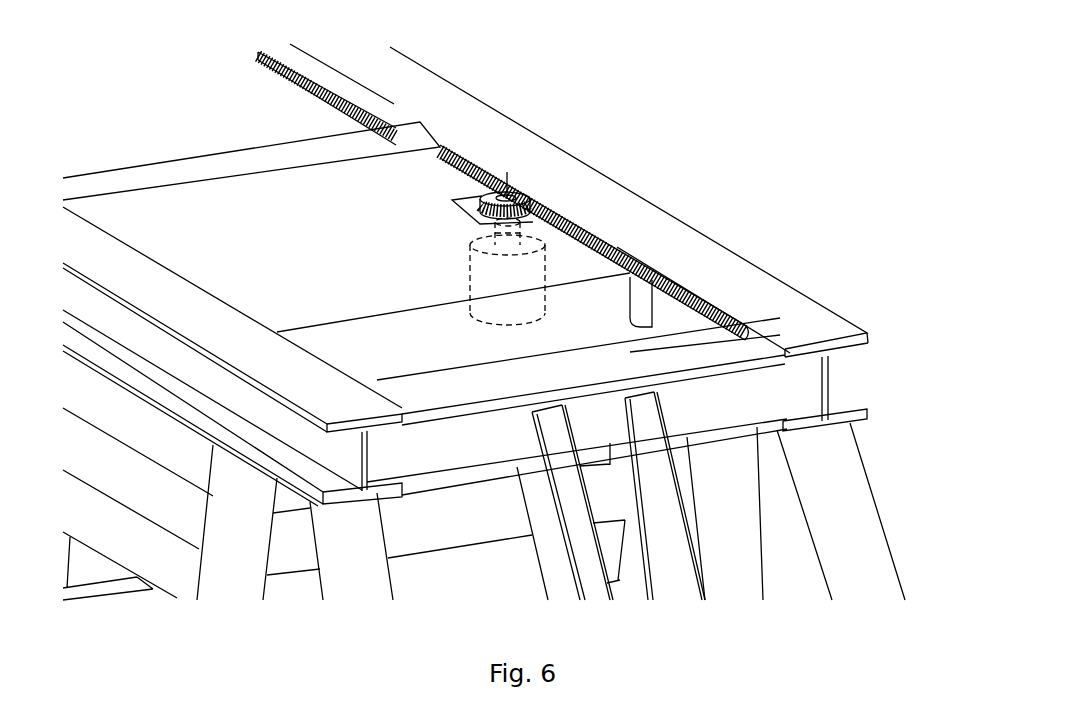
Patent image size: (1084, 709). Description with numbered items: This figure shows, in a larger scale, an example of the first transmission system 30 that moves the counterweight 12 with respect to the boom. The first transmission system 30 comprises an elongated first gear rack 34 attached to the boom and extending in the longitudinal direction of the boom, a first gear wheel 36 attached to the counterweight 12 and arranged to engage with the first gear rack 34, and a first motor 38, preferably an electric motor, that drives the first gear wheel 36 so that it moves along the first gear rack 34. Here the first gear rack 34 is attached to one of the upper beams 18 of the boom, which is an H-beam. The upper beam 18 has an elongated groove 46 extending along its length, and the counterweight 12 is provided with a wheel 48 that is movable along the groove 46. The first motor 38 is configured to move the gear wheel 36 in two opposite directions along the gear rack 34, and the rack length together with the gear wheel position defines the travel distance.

The counterweight 12 is at (262, 208).
The upper beam 18 is at (777, 305).
The first transmission system 30 is at (530, 186).
The first gear rack 34 is at (627, 255).
The first gear wheel 36 is at (507, 190).
The first motor 38 is at (523, 273).
The elongated groove 46 is at (688, 325).
The wheel 48 is at (692, 300).